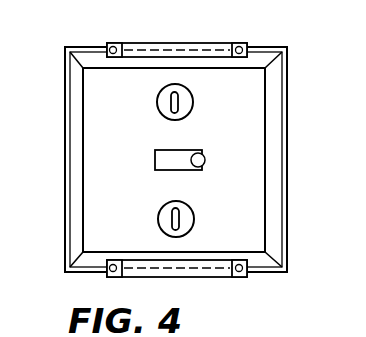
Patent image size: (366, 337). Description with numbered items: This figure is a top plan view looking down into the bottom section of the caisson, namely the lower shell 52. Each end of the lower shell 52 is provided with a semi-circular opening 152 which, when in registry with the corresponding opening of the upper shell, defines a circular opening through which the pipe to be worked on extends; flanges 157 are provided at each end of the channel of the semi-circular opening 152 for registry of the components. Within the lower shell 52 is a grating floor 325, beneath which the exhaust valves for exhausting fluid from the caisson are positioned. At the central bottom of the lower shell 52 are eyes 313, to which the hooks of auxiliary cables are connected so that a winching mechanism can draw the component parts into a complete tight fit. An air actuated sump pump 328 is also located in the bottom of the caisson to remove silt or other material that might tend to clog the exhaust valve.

The lower shell 52 is at (58, 116).
The semi-circular opening 152 is at (172, 50).
The flange 157 is at (113, 46).
The eye 313 is at (180, 103).
The grating floor 325 is at (252, 107).
The air actuated sump pump 328 is at (155, 150).